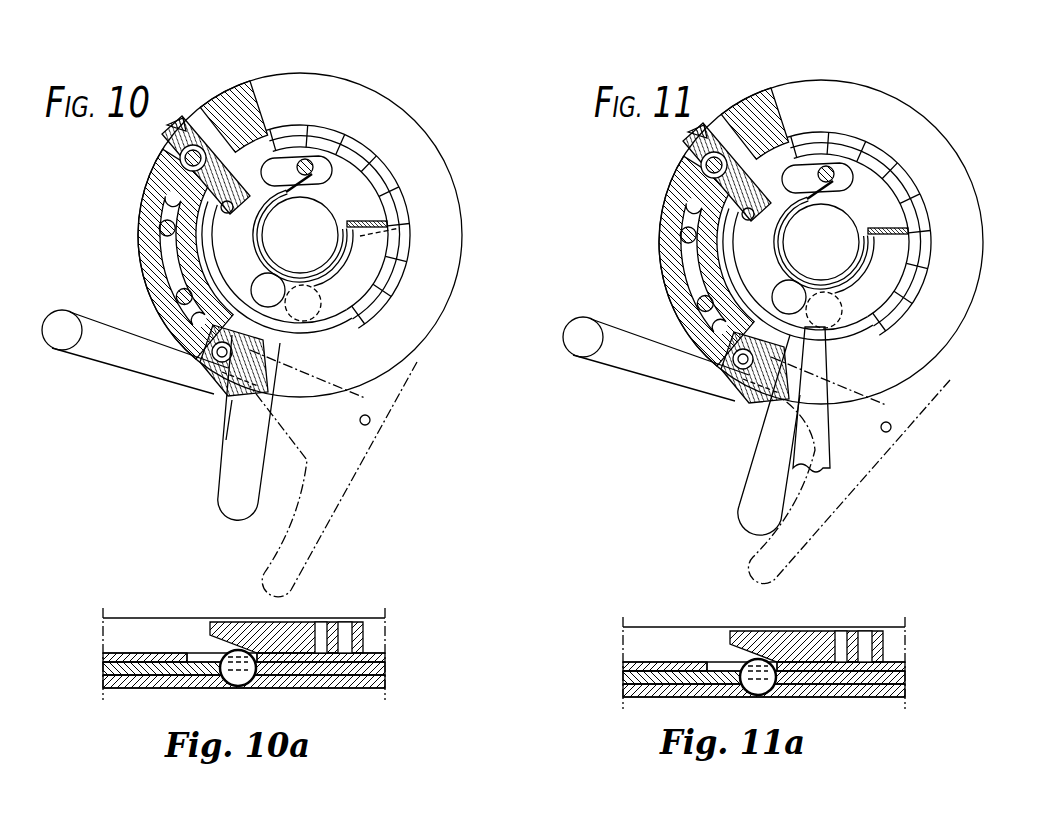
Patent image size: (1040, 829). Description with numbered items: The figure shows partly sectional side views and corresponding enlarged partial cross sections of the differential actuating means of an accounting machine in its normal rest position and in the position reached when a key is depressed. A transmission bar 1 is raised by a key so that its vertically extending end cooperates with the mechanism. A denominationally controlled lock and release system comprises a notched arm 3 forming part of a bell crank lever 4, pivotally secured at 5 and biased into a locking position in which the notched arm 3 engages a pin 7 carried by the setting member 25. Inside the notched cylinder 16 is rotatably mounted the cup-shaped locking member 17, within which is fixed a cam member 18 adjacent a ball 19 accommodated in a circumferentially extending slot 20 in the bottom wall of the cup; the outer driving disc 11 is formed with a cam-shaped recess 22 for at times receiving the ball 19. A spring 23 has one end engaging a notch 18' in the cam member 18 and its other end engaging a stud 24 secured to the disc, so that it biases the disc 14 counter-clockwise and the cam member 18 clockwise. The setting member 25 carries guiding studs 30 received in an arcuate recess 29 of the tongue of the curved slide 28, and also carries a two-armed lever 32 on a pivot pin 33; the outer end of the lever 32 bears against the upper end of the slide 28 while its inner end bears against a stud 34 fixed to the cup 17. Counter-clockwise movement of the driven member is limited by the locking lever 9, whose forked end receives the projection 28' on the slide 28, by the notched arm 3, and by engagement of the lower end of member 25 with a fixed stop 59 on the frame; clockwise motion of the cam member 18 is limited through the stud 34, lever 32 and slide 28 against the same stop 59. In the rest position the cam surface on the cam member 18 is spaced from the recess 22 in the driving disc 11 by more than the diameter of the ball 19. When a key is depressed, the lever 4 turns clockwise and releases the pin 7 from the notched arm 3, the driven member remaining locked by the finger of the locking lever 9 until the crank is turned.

In FIG. 11, the transmission bar 1 is at (827, 399).
In FIG. 10, the notched arm 3 is at (226, 326).
In FIG. 11, the notched arm 3 is at (813, 281).
In FIG. 10, the bell crank lever 4 is at (307, 463).
In FIG. 11, the bell crank lever 4 is at (849, 470).
In FIG. 10, the pivot 5 is at (372, 420).
In FIG. 11, the pivot 5 is at (913, 433).
In FIG. 10, the pin 7 is at (216, 360).
In FIG. 11, the pin 7 is at (724, 391).
In FIG. 10, the locking lever 9 is at (118, 356).
In FIG. 11, the locking lever 9 is at (656, 362).
In FIG. 10A, the outer driving disc 11 is at (103, 684).
In FIG. 11A, the outer driving disc 11 is at (742, 695).
In FIG. 10A, the disc 14 is at (150, 690).
In FIG. 11A, the disc 14 is at (764, 699).
In FIG. 10, the notched cylinder 16 is at (383, 306).
In FIG. 11, the notched cylinder 16 is at (829, 242).
In FIG. 10, the cup-shaped locking member 17 is at (315, 327).
In FIG. 11, the cup-shaped locking member 17 is at (812, 292).
In FIG. 10A, the cup-shaped locking member 17 is at (112, 652).
In FIG. 11A, the cup-shaped locking member 17 is at (764, 634).
In FIG. 10, the cam member 18 is at (358, 226).
In FIG. 11, the cam member 18 is at (881, 233).
In FIG. 10A, the cam member 18 is at (286, 620).
In FIG. 11A, the cam member 18 is at (806, 629).
In FIG. 10, the notch 18' is at (402, 207).
In FIG. 10, the ball 19 is at (312, 320).
In FIG. 11, the ball 19 is at (840, 304).
In FIG. 10A, the ball 19 is at (240, 688).
In FIG. 11A, the ball 19 is at (760, 693).
In FIG. 10, the circumferentially extending slot 20 is at (272, 282).
In FIG. 11, the circumferentially extending slot 20 is at (821, 247).
In FIG. 10A, the circumferentially extending slot 20 is at (201, 655).
In FIG. 11A, the circumferentially extending slot 20 is at (742, 634).
In FIG. 10A, the cam-shaped recess 22 is at (222, 688).
In FIG. 11A, the cam-shaped recess 22 is at (740, 697).
In FIG. 10, the spring 23 is at (340, 215).
In FIG. 11, the spring 23 is at (839, 234).
In FIG. 10, the stud 24 is at (309, 160).
In FIG. 11, the stud 24 is at (817, 181).
In FIG. 10, the setting member 25 is at (243, 380).
In FIG. 11, the setting member 25 is at (755, 255).
In FIG. 10, the curved slide 28 is at (169, 254).
In FIG. 11, the curved slide 28 is at (689, 261).
In FIG. 10, the projection 28' is at (217, 437).
In FIG. 10, the arcuate recess 29 is at (155, 262).
In FIG. 11, the arcuate recess 29 is at (672, 267).
In FIG. 10, the guiding stud 30 is at (178, 298).
In FIG. 11, the guiding stud 30 is at (664, 275).
In FIG. 10, the two-armed lever 32 is at (180, 128).
In FIG. 11, the two-armed lever 32 is at (727, 152).
In FIG. 10, the pivot pin 33 is at (185, 158).
In FIG. 11, the pivot pin 33 is at (685, 161).
In FIG. 10, the stud 34 is at (229, 213).
In FIG. 11, the stud 34 is at (754, 230).
In FIG. 10, the fixed stop 59 is at (258, 438).
In FIG. 11, the fixed stop 59 is at (757, 435).